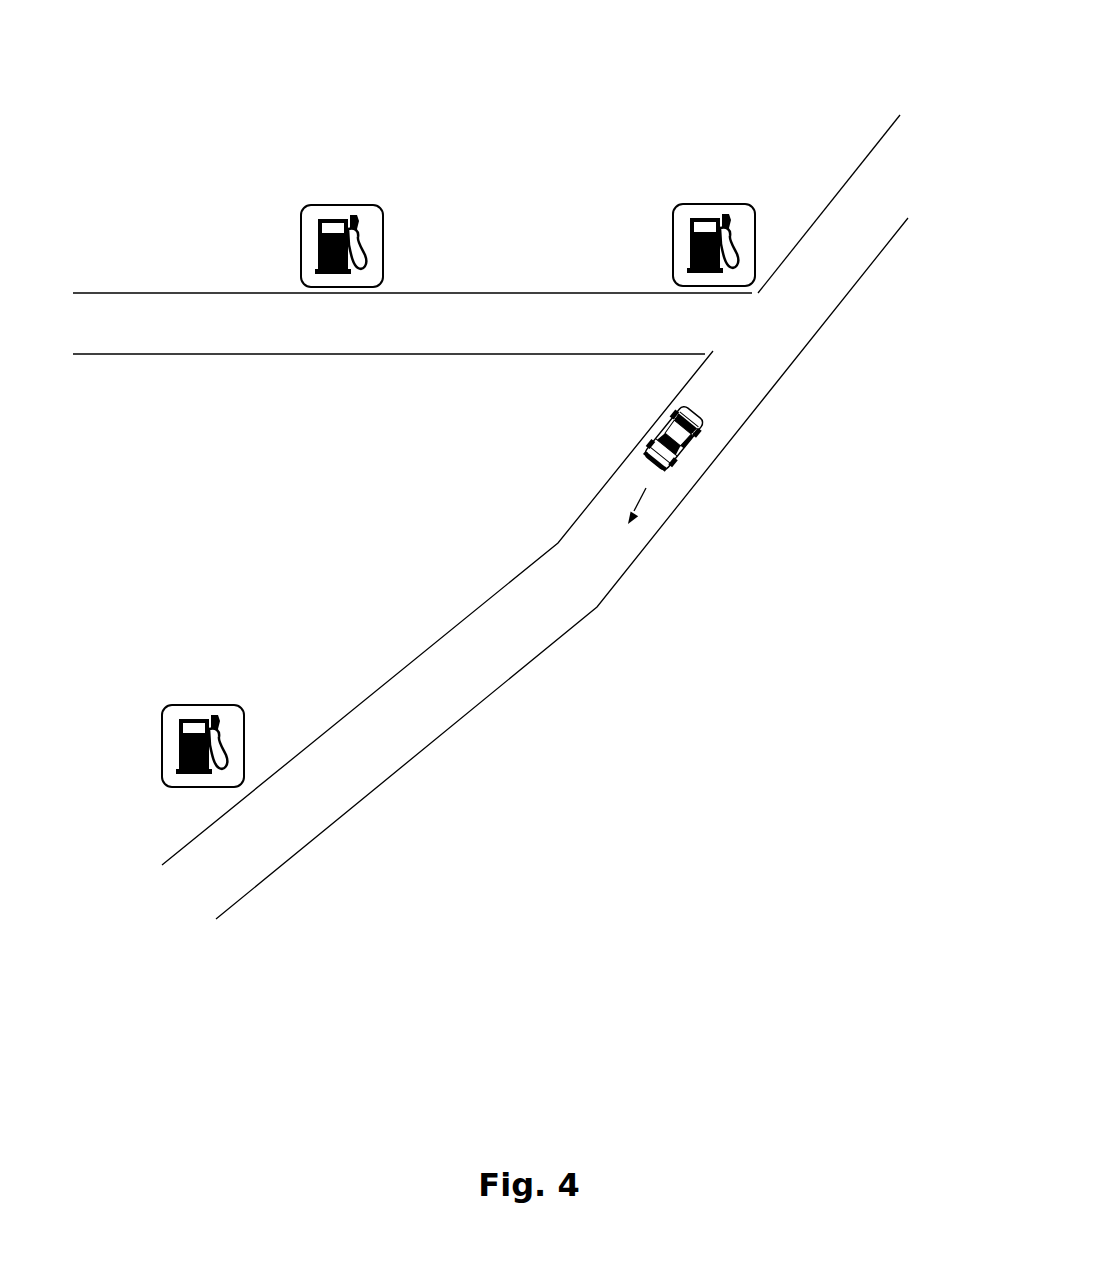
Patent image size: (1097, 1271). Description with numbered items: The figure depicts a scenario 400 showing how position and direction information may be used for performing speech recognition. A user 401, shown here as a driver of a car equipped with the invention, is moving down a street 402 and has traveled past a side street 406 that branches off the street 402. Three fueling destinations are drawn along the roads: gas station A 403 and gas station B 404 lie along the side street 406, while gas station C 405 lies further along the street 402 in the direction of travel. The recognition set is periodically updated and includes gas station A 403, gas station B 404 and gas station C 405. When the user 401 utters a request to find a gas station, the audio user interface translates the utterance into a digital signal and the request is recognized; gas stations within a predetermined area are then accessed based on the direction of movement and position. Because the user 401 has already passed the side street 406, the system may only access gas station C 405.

The scenario 400 is at (553, 57).
The user 401 is at (703, 432).
The street 402 is at (822, 275).
The gas station A 403 is at (712, 204).
The gas station B 404 is at (340, 205).
The gas station C 405 is at (200, 705).
The side street 406 is at (288, 327).